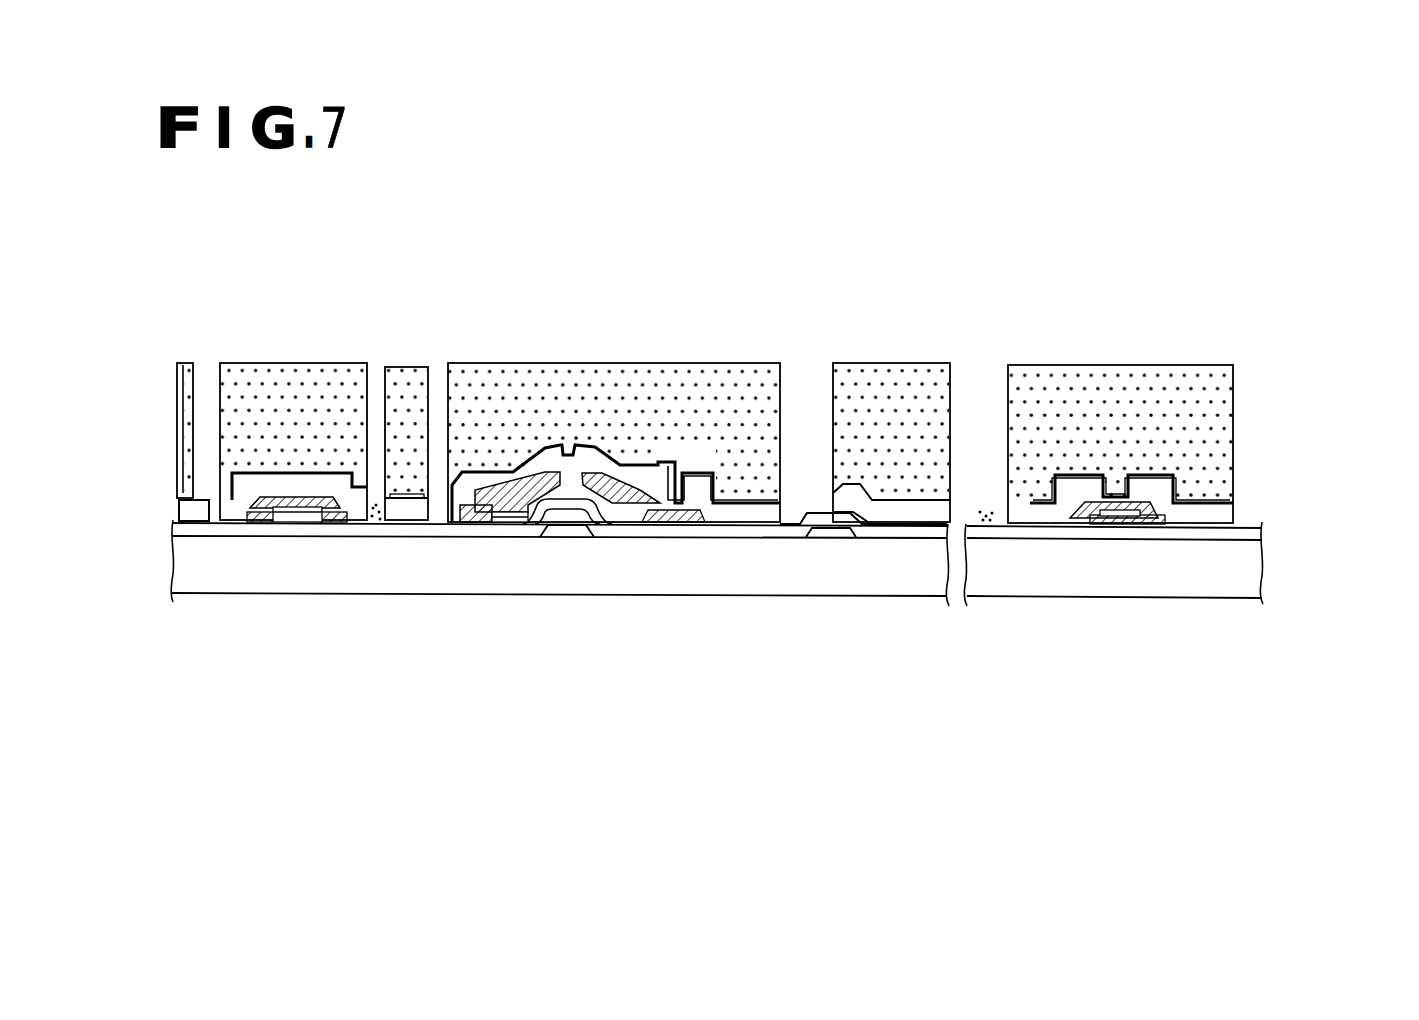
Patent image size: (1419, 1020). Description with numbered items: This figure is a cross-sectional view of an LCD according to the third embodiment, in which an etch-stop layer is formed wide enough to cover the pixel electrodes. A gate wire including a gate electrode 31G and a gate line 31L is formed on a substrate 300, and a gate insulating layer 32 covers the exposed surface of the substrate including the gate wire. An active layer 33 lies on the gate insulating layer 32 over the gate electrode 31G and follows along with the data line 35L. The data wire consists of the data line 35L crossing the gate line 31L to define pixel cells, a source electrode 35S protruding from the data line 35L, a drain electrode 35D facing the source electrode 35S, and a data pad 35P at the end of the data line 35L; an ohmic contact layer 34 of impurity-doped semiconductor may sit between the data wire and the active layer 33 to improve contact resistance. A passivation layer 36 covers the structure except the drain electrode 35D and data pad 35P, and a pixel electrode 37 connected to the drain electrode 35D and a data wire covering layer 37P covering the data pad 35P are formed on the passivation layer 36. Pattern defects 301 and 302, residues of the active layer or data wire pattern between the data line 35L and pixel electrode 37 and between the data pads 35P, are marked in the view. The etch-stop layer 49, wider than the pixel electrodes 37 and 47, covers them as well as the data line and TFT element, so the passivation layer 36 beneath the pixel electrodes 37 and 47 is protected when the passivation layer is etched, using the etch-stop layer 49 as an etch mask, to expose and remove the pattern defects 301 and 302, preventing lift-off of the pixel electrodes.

The substrate 300 is at (1253, 583).
The gate insulating layer 32 is at (203, 535).
The gate electrode 31G is at (568, 533).
The gate line 31L is at (828, 528).
The etch-stop layer 49 is at (178, 363).
The passivation layer 36 is at (178, 508).
The pixel electrode 37 is at (178, 450).
The pixel electrode 47 is at (870, 484).
The data line 35L is at (258, 513).
The source electrode 35S is at (525, 522).
The drain electrode 35D is at (680, 525).
The data pad 35P is at (1157, 523).
The data wire covering layer 37P is at (1190, 503).
The active layer 33 is at (287, 518).
The ohmic contact layer 34 is at (310, 517).
The pattern defect 301 is at (375, 523).
The pattern defect 302 is at (983, 527).